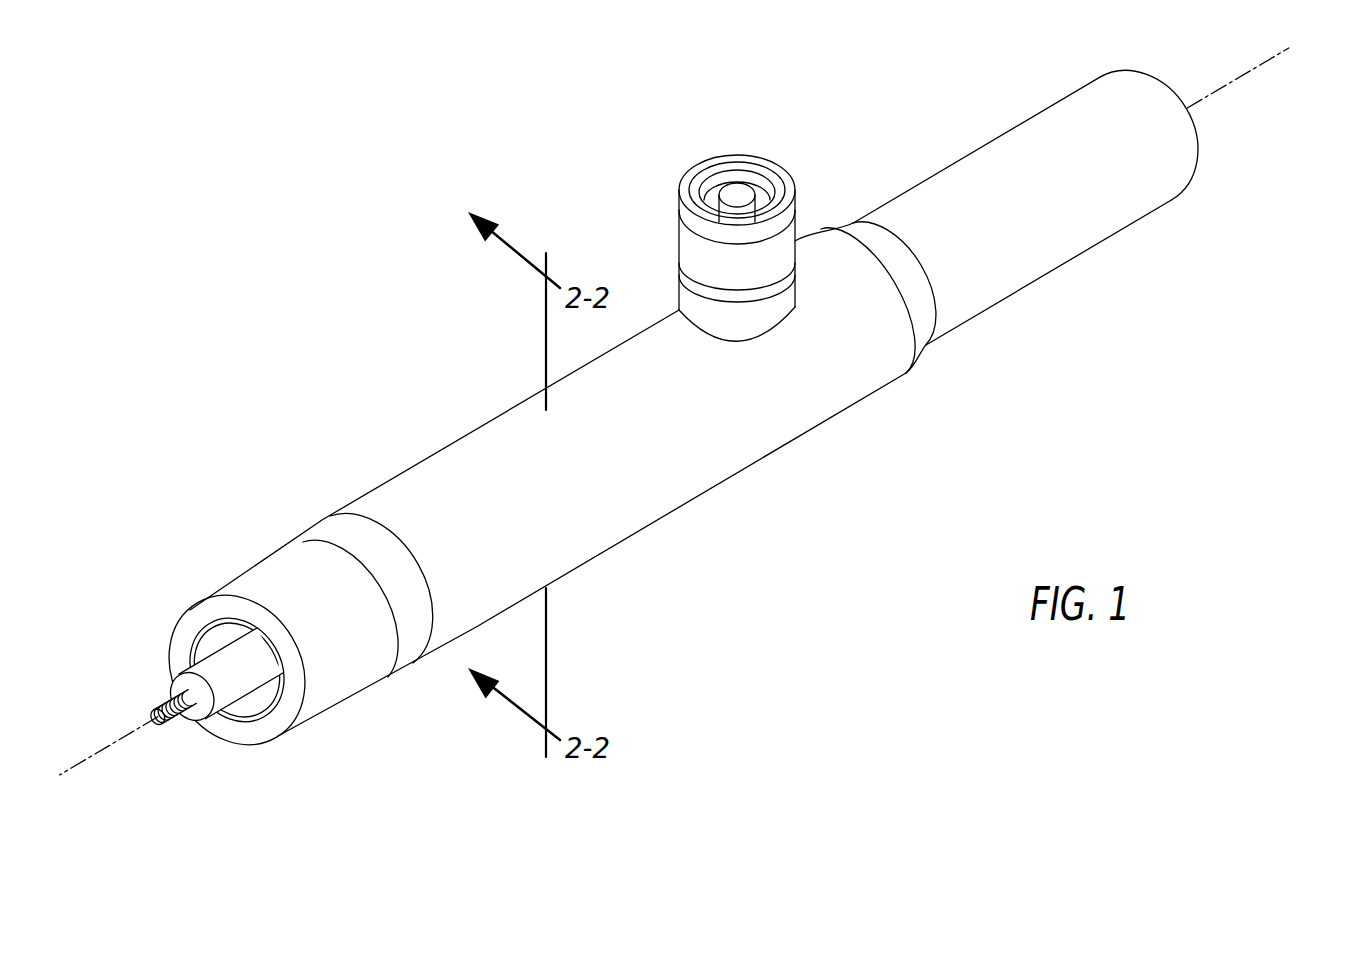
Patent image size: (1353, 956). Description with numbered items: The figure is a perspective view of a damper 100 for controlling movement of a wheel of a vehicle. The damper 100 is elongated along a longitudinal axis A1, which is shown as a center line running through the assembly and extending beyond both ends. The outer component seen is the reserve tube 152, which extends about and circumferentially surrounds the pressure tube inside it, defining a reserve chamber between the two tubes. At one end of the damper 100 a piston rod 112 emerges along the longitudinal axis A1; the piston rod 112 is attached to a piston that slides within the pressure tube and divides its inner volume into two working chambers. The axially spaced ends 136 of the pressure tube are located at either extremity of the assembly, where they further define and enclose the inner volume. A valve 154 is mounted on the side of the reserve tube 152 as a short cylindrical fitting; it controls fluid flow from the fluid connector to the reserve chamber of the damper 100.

The damper 100 is at (702, 436).
The piston rod 112 is at (232, 677).
The axially spaced ends 136 is at (182, 728).
The reserve tube 152 is at (693, 452).
The valve 154 is at (677, 241).
The longitudinal axis A1 is at (1262, 66).